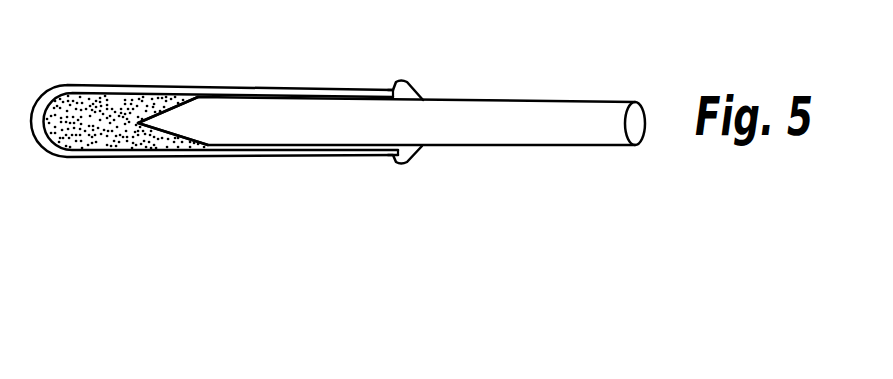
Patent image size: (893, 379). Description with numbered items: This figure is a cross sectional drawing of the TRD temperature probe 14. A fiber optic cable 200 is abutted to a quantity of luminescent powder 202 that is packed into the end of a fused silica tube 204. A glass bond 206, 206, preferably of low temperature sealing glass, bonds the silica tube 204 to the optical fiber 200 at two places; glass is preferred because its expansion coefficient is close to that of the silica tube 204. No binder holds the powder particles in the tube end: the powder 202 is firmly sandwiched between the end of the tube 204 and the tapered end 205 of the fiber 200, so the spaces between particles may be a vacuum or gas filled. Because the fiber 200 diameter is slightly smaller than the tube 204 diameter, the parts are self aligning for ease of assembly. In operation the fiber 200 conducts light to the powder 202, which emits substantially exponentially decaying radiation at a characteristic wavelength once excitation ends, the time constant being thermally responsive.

The TRD temperature probe 14 is at (350, 45).
The fiber optic cable 200 is at (592, 145).
The luminescent powder 202 is at (63, 137).
The fused silica tube 204 is at (158, 162).
The tapered end 205 is at (137, 122).
The glass bond 206 is at (410, 82).